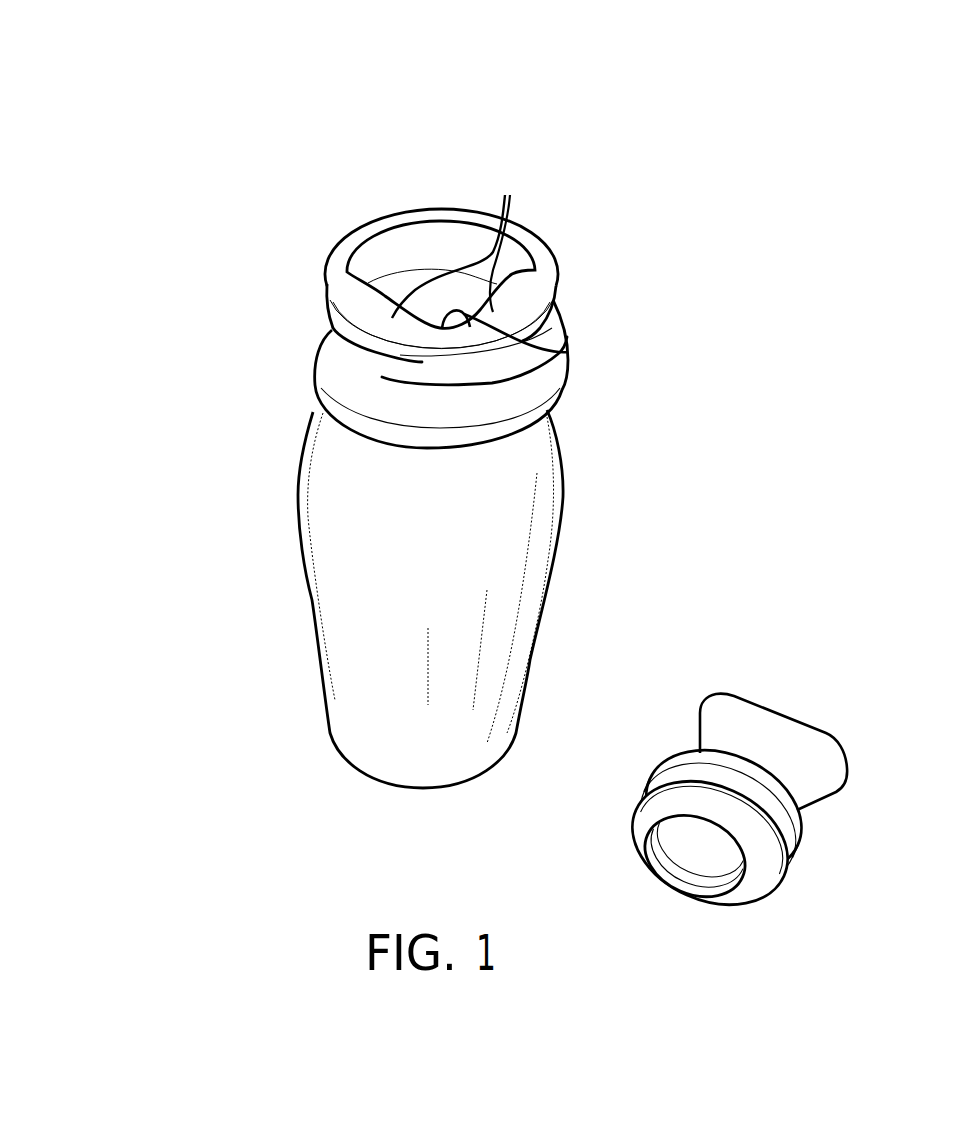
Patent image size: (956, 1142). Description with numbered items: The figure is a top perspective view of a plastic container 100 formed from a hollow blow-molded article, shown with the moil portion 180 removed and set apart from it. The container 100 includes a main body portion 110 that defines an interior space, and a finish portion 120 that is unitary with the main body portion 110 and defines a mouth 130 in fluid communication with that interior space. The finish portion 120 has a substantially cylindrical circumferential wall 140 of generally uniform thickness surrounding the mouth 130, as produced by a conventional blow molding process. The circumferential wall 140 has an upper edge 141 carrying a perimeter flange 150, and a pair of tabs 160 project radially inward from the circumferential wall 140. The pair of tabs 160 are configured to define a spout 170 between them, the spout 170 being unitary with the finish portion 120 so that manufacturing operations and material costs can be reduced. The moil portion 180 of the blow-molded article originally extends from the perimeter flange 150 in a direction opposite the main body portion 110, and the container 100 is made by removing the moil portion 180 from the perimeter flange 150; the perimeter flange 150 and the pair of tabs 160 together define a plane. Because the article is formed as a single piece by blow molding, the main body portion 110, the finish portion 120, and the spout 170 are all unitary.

The plastic container 100 is at (176, 121).
The main body portion 110 is at (255, 396).
The finish portion 120 is at (642, 203).
The mouth 130 is at (431, 238).
The circumferential wall 140 is at (338, 348).
The upper edge 141 is at (338, 266).
The perimeter flange 150 is at (370, 232).
The pair of tabs 160 is at (459, 240).
The spout 170 is at (562, 353).
The moil portion 180 is at (762, 666).